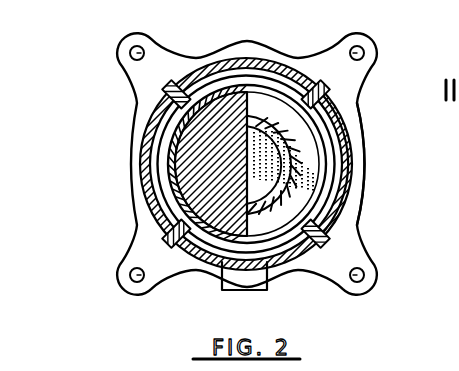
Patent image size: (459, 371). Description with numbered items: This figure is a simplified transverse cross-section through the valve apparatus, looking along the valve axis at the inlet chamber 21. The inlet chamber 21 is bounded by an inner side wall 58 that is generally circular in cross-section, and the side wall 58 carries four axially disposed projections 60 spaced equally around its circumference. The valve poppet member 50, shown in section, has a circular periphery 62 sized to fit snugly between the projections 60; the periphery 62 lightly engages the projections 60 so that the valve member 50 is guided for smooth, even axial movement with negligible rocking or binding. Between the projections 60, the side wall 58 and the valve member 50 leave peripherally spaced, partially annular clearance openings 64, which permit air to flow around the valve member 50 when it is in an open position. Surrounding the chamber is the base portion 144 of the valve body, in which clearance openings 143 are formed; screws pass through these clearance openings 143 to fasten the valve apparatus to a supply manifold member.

The base portion 144 is at (116, 72).
The clearance openings 143 is at (140, 46).
The inner side wall 58 is at (363, 129).
The clearance openings 64 is at (240, 72).
The inlet chamber 21 is at (343, 200).
The circular periphery 62 is at (160, 153).
The valve poppet member 50 is at (229, 283).
The axially disposed projections 60 is at (311, 82).